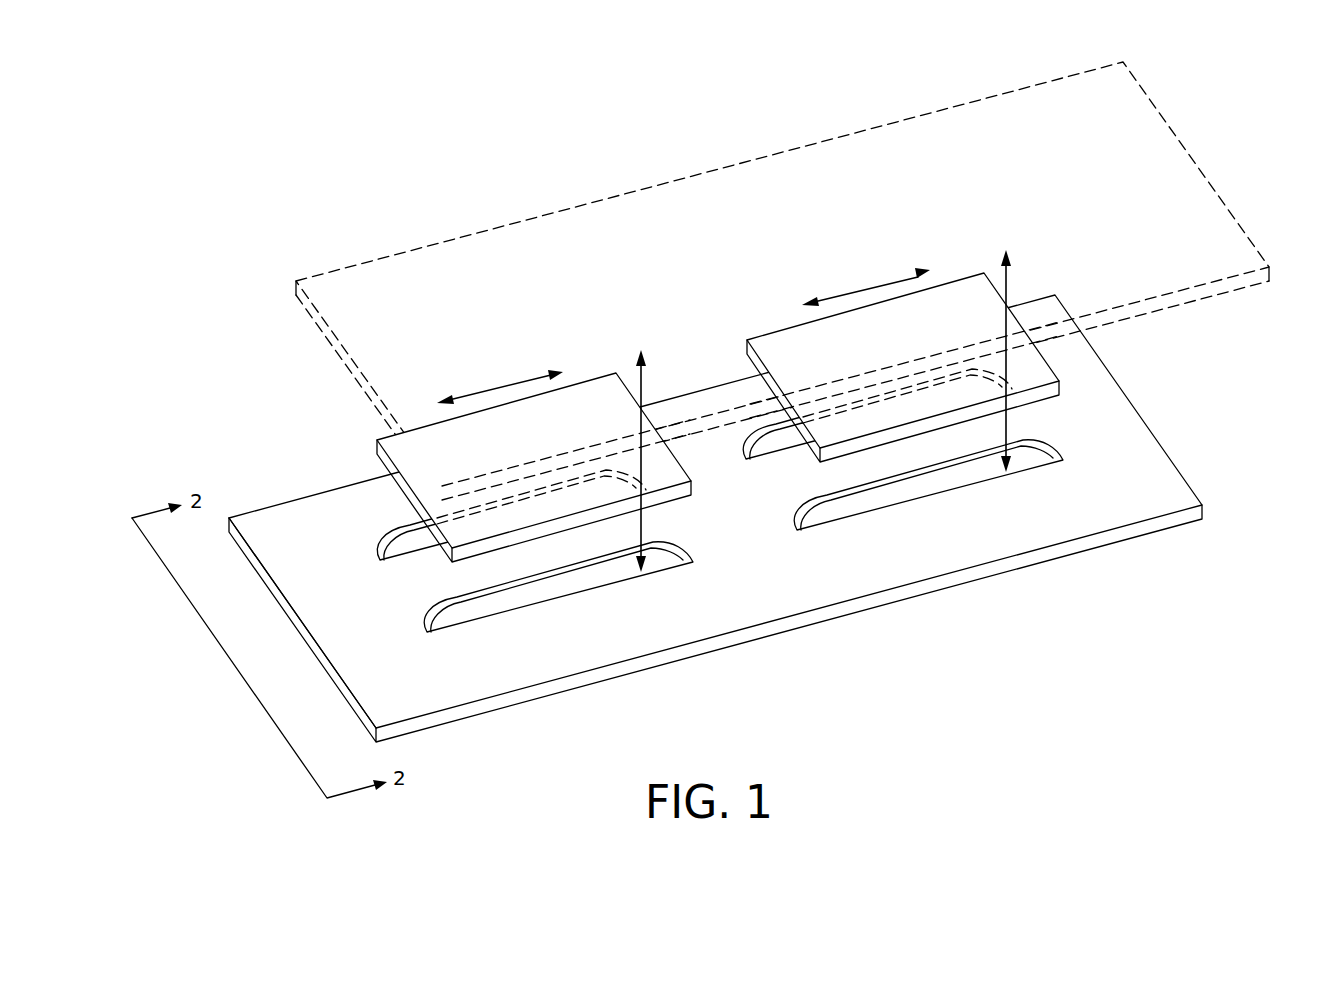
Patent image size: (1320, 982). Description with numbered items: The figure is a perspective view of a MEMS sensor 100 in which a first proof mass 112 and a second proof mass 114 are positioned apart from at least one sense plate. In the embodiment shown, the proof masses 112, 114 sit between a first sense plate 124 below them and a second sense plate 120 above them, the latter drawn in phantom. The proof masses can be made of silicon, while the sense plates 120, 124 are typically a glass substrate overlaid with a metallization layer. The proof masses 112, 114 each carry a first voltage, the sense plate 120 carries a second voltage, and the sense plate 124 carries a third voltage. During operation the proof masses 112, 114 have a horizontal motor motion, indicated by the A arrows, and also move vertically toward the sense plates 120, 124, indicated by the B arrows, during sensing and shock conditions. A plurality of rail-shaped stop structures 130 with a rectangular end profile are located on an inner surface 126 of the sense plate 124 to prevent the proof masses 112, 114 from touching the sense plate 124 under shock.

The MEMS sensor 100 is at (377, 200).
The first proof mass 112 is at (555, 437).
The second proof mass 114 is at (918, 338).
The second sense plate 120 is at (497, 279).
The first sense plate 124 is at (768, 598).
The inner surface 126 is at (320, 610).
The stop structures 130 is at (404, 528).